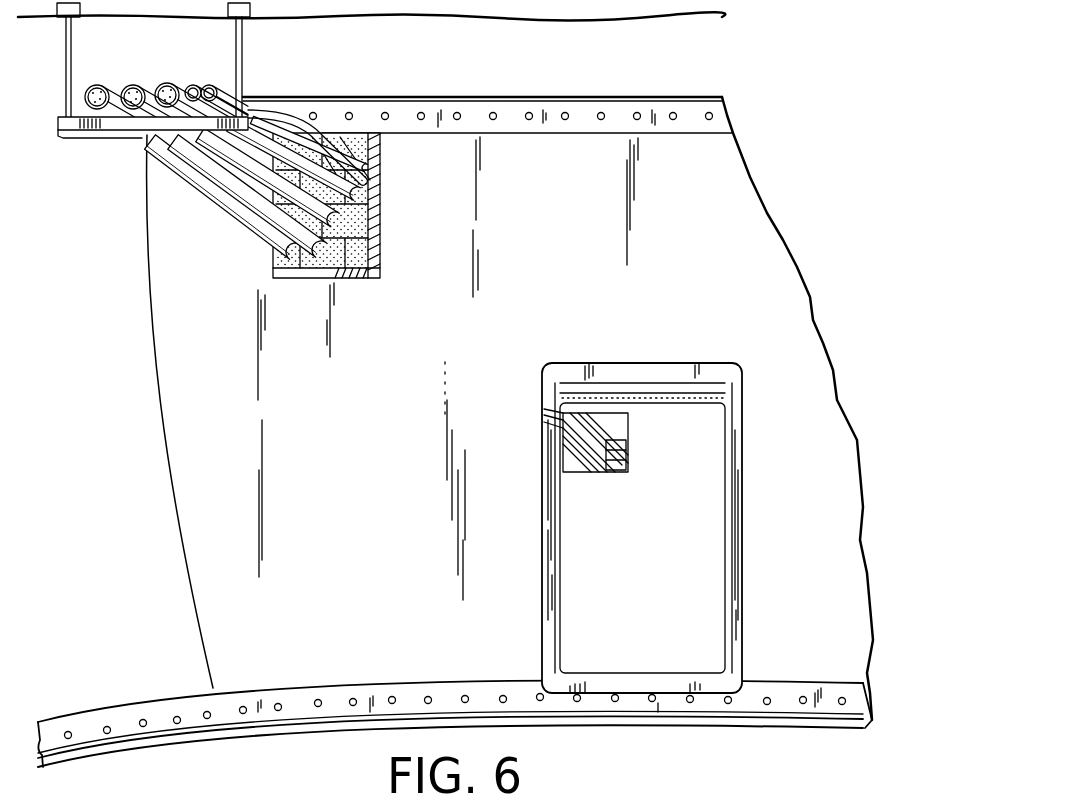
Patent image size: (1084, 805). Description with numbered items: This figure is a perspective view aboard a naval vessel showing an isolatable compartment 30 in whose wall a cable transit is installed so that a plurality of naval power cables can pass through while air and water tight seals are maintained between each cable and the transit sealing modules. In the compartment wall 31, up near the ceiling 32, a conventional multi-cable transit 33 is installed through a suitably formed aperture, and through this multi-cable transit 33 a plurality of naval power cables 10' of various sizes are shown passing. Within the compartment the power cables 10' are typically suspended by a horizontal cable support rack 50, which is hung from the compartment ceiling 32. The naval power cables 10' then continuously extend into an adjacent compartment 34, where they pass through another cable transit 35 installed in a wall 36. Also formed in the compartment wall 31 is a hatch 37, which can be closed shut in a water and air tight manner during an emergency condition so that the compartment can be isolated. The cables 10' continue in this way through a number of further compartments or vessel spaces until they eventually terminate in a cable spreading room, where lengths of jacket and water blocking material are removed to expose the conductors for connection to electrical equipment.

The isolatable compartment 30 is at (130, 558).
The compartment wall 31 is at (381, 461).
The ceiling 32 is at (546, 75).
The multi-cable transit 33 is at (383, 219).
The naval power cables 10' is at (379, 318).
The horizontal cable support rack 50 is at (88, 136).
The adjacent compartment 34 is at (705, 546).
The cable transit 35 is at (620, 455).
The wall 36 is at (661, 581).
The hatch 37 is at (745, 450).